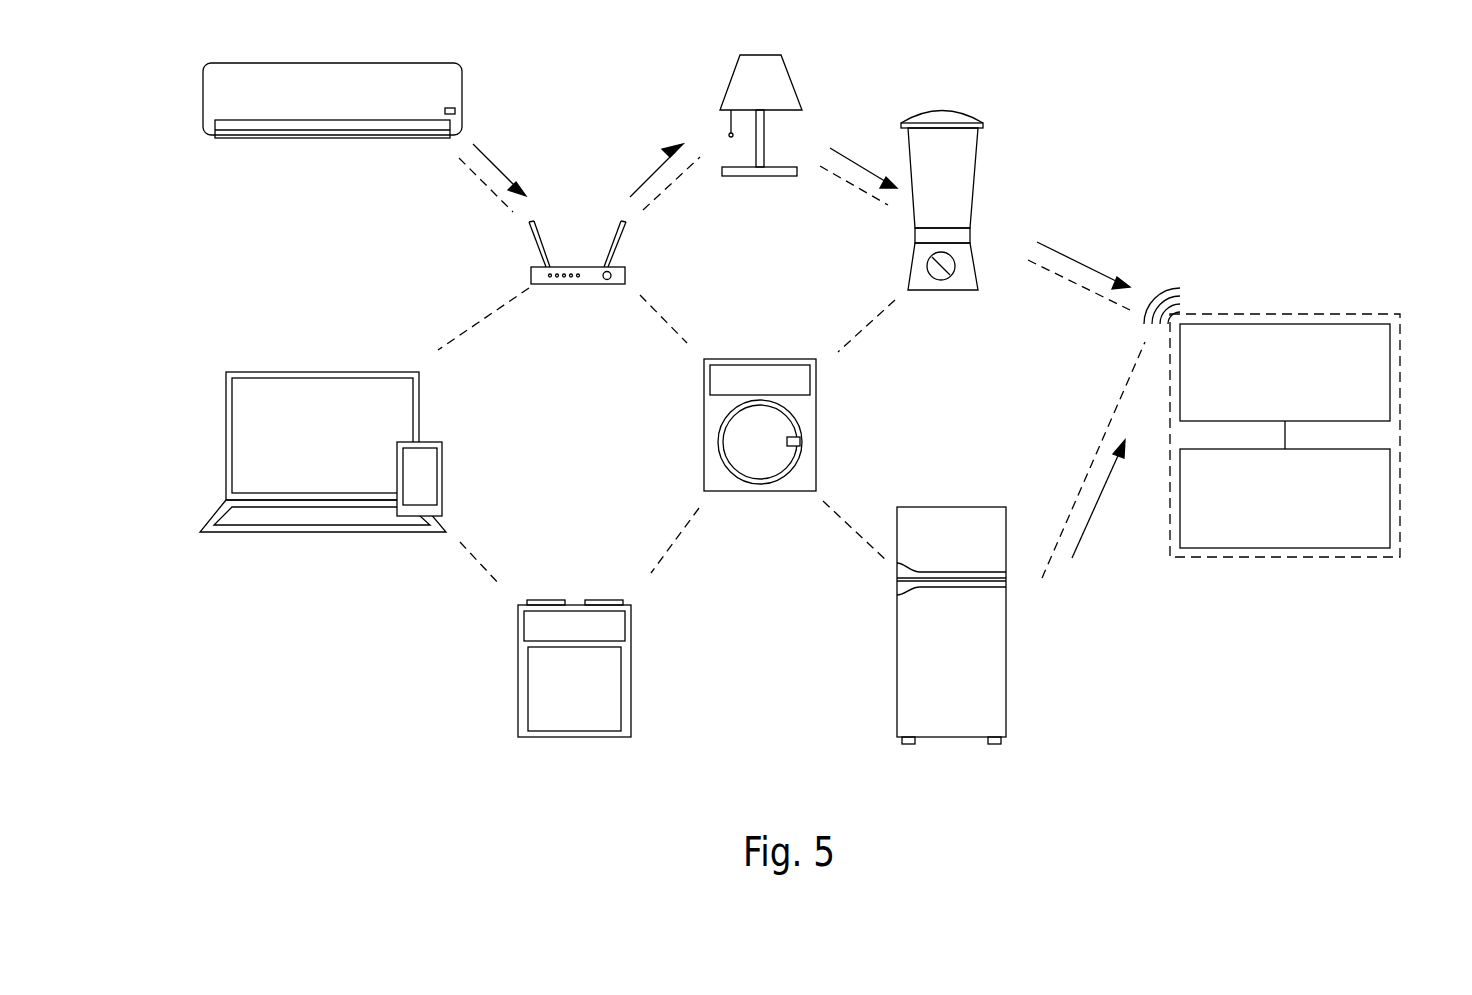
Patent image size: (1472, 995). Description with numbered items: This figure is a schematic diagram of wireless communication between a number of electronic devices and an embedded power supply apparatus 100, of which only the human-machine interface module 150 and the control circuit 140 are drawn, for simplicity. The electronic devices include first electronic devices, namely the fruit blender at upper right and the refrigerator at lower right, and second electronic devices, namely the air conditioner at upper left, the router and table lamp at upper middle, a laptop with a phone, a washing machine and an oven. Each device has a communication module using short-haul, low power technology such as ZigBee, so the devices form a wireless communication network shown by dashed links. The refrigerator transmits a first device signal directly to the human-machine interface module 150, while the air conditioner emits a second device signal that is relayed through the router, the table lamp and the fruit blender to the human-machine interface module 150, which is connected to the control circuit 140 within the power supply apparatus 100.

The power supply apparatus 100 is at (1321, 435).
The human-machine interface module 150 is at (1390, 386).
The control circuit 140 is at (1390, 497).